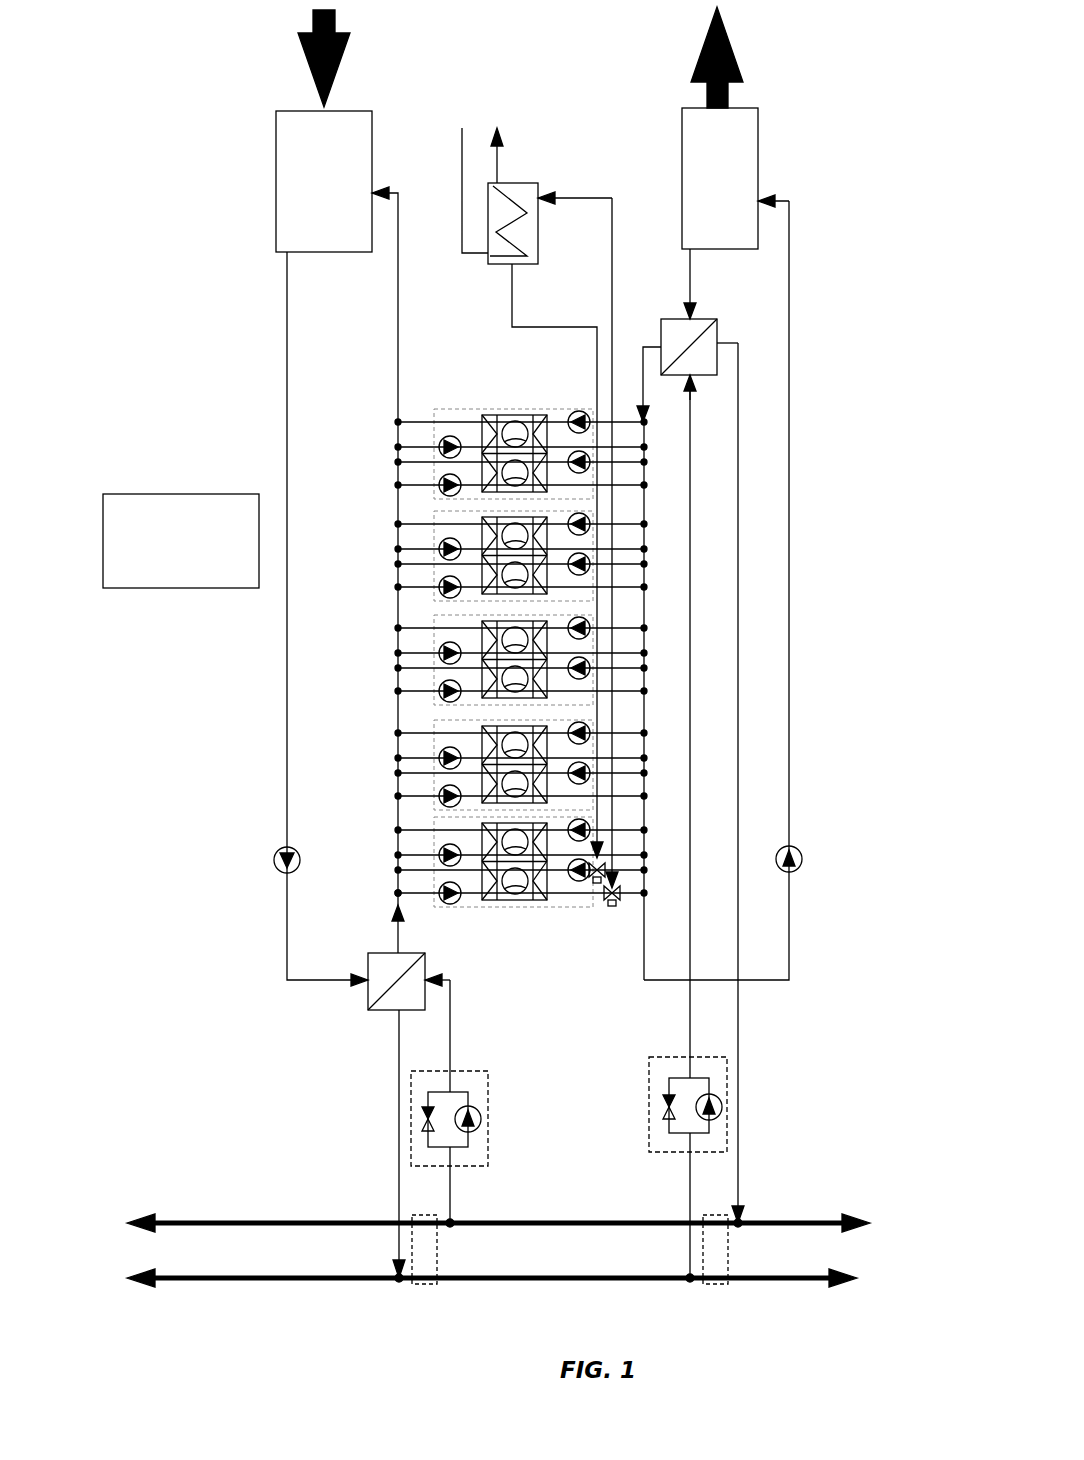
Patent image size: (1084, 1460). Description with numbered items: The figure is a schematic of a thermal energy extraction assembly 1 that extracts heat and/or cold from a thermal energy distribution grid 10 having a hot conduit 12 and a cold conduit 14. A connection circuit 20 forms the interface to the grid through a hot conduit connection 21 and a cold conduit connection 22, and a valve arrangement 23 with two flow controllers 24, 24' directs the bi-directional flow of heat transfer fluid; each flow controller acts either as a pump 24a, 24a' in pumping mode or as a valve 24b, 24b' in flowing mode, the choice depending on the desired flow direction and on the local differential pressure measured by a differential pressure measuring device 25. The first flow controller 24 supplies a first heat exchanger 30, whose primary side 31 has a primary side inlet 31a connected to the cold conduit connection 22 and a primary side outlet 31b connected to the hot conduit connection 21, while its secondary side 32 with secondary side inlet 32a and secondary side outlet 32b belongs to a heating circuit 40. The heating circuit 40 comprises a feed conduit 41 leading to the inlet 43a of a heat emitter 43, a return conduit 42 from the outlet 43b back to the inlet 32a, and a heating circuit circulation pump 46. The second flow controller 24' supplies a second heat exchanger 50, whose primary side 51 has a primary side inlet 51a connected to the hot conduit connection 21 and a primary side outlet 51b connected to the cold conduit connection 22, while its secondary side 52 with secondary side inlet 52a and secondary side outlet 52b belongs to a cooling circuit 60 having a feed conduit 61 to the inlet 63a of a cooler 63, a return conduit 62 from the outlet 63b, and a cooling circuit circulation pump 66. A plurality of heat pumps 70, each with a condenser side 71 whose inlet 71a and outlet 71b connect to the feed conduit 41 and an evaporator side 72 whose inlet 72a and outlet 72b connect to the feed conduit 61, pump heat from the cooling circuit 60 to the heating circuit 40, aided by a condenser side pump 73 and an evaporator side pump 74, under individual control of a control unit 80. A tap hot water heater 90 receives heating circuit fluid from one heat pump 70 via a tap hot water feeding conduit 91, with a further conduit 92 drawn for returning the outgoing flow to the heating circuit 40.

The thermal energy extraction assembly 1 is at (831, 777).
The thermal energy distribution grid 10 is at (498, 1270).
The hot conduit 12 is at (205, 1222).
The cold conduit 14 is at (235, 1280).
The connection circuit 20 is at (588, 813).
The hot conduit connection 21 is at (452, 1205).
The cold conduit connection 22 is at (399, 1185).
The valve arrangement 23 is at (568, 1096).
The first flow controller 24 is at (721, 1089).
The second flow controller 24' is at (450, 1098).
The pump 24a is at (747, 1108).
The pump 24a' is at (487, 1081).
The valve 24b is at (662, 1073).
The valve 24b' is at (384, 1120).
The differential pressure measuring device 25 is at (437, 1255).
The first heat exchanger 30 is at (712, 330).
The primary side 31 is at (740, 345).
The primary side inlet 31a is at (691, 398).
The primary side outlet 31b is at (740, 362).
The secondary side 32 is at (665, 318).
The secondary side inlet 32a is at (692, 300).
The secondary side outlet 32b is at (643, 360).
The heating circuit 40 is at (737, 493).
The feed conduit 41 is at (644, 940).
The return conduit 42 is at (688, 282).
The heat emitter 43 is at (752, 128).
The inlet 43a is at (795, 201).
The outlet 43b is at (688, 255).
The heating circuit circulation pump 46 is at (798, 870).
The second heat exchanger 50 is at (368, 1003).
The primary side 51 is at (398, 1014).
The primary side inlet 51a is at (444, 980).
The primary side outlet 51b is at (404, 1022).
The secondary side 52 is at (363, 951).
The secondary side inlet 52a is at (367, 977).
The secondary side outlet 52b is at (404, 950).
The cooling circuit 60 is at (341, 540).
The feed conduit 61 is at (397, 885).
The return conduit 62 is at (287, 915).
The cooler 63 is at (282, 117).
The inlet 63a is at (380, 193).
The outlet 63b is at (287, 256).
The cooling circuit circulation pump 66 is at (278, 852).
The heat pump 70 is at (497, 415).
The condenser side 71 is at (556, 411).
The inlet 71a is at (575, 412).
The outlet 71b is at (638, 446).
The evaporator side 72 is at (452, 411).
The inlet 72a is at (401, 447).
The outlet 72b is at (398, 419).
The condenser side pump 73 is at (599, 406).
The evaporator side pump 74 is at (448, 436).
The control unit 80 is at (157, 576).
The tap hot water heater 90 is at (512, 188).
The tap hot water feeding conduit 91 is at (585, 198).
The pipe 92 is at (512, 290).